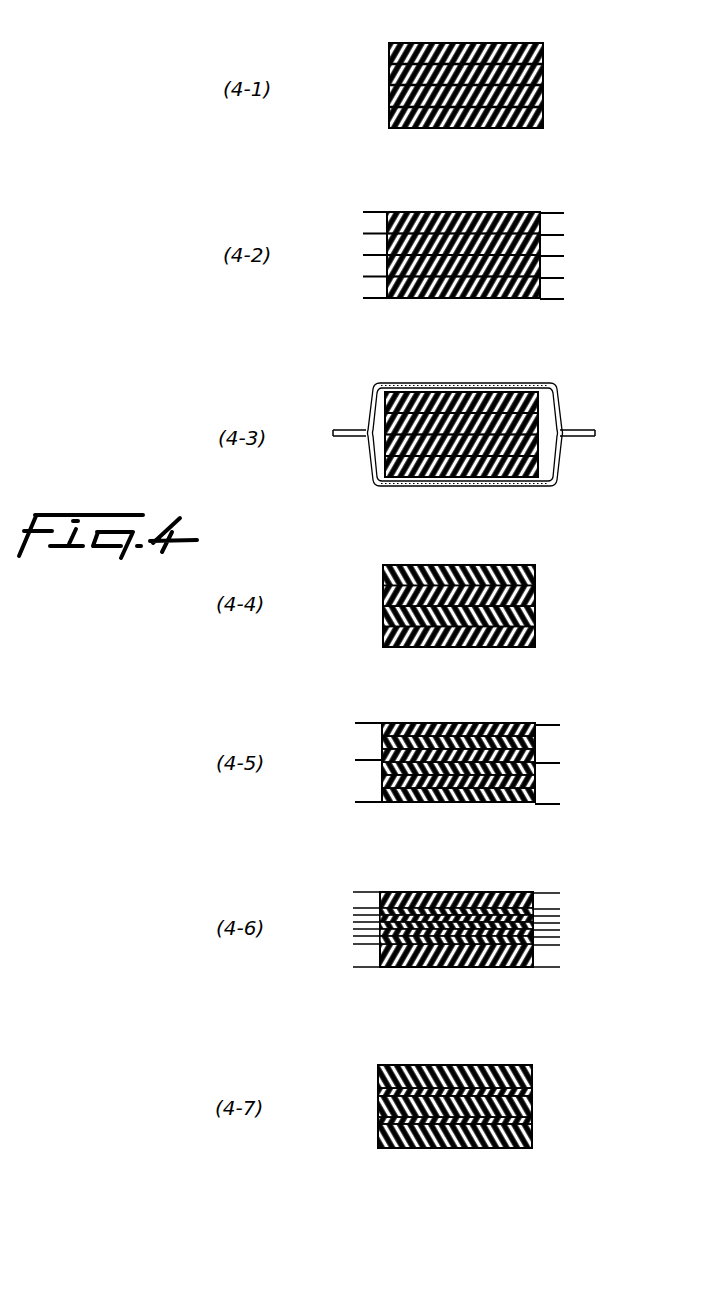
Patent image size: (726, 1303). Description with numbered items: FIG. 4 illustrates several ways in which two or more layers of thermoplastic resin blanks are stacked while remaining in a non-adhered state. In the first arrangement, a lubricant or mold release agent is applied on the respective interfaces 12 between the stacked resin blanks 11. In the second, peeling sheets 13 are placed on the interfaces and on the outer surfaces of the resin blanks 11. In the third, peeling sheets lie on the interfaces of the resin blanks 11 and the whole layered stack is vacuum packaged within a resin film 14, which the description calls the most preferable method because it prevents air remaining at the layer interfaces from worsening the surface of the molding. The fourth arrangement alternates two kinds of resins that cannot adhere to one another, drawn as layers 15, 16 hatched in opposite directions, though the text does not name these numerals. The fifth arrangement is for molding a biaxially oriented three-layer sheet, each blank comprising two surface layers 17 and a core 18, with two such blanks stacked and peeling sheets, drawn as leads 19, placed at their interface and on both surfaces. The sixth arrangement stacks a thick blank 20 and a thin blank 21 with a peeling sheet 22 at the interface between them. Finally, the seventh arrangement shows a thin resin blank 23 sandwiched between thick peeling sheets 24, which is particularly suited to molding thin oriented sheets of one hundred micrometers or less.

The resin blanks 11 is at (542, 78).
The interfaces 12 is at (433, 78).
The peeling sheets 13 is at (372, 232).
The resin film 14 is at (537, 488).
The sheet (first orientation) 15 is at (535, 605).
The sheet (second orientation) 16 is at (383, 640).
The surface layers 17 is at (535, 750).
The core 18 is at (382, 770).
The lead wire 19 is at (553, 724).
The thick blank 20 is at (535, 897).
The thin blank 21 is at (535, 912).
The peeling sheet 22 is at (355, 948).
The thin resin blank 23 is at (532, 1120).
The thick peeling sheets 24 is at (528, 1065).